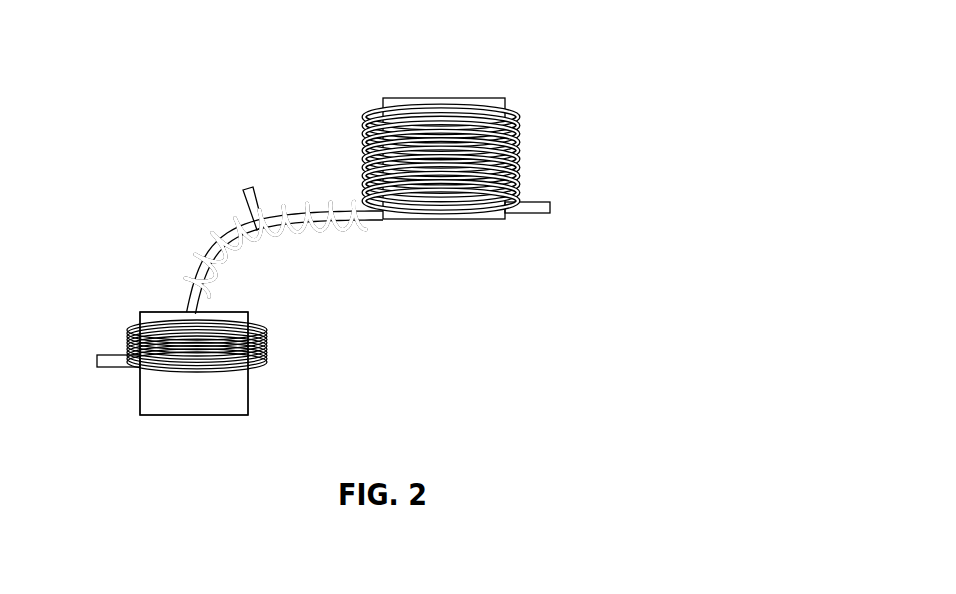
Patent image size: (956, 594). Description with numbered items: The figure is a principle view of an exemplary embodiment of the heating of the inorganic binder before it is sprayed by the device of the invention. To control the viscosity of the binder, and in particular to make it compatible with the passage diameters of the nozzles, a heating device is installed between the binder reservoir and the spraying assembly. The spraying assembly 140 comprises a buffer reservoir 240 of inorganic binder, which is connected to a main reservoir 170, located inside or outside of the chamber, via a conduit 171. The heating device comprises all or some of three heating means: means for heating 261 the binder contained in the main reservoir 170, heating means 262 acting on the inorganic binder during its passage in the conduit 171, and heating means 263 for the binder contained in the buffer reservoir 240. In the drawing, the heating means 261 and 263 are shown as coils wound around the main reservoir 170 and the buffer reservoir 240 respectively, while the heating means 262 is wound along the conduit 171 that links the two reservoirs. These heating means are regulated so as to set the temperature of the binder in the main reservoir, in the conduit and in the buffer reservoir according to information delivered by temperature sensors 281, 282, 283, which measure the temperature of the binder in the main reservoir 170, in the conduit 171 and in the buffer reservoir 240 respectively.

The spraying assembly 140 is at (250, 392).
The main reservoir 170 is at (492, 97).
The conduit 171 is at (240, 239).
The buffer reservoir 240 is at (150, 312).
The means for heating 261 is at (519, 148).
The heating means 262 is at (318, 230).
The heating means 263 is at (268, 340).
The temperature sensor 281 is at (527, 213).
The temperature sensor 282 is at (262, 212).
The temperature sensor 283 is at (118, 368).